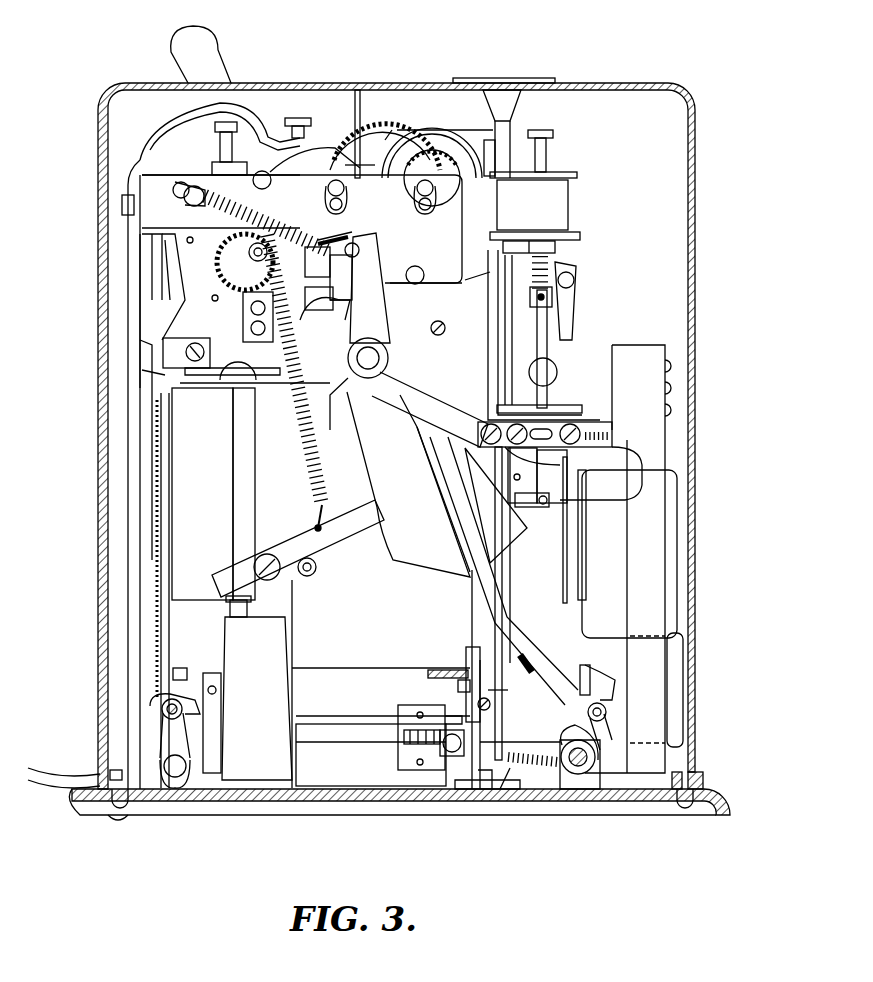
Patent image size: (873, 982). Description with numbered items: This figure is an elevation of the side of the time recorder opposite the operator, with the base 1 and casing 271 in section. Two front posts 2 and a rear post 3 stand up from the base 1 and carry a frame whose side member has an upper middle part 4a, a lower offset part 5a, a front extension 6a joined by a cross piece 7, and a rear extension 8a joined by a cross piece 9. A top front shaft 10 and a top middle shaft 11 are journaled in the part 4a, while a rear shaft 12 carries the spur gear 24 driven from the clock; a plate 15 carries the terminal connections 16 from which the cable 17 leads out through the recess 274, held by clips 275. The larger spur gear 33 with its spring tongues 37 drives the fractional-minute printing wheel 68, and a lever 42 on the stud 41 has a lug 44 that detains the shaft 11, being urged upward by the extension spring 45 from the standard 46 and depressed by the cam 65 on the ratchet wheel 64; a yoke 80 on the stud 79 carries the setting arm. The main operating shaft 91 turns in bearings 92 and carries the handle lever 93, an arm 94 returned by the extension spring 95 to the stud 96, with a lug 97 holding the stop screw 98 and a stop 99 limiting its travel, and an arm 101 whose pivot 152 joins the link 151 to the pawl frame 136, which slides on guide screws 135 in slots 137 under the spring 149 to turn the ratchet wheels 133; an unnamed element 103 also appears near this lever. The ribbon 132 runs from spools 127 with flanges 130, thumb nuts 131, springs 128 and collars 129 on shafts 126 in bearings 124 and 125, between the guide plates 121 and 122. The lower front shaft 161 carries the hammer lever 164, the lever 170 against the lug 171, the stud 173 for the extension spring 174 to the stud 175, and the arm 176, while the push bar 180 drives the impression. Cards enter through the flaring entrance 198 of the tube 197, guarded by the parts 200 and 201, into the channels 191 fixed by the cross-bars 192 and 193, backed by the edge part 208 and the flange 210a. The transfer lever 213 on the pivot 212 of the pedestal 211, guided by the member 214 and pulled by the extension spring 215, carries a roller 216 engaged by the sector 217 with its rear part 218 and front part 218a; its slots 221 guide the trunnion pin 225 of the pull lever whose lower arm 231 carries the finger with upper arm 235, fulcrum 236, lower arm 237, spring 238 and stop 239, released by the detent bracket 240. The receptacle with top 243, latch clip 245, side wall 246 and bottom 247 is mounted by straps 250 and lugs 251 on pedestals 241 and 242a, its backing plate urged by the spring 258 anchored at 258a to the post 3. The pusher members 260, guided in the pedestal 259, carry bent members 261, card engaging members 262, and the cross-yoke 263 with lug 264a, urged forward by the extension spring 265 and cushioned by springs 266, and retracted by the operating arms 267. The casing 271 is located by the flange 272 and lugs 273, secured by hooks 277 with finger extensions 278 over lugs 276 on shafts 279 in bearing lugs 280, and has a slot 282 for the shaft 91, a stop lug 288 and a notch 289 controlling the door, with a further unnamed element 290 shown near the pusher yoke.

The base 1 is at (352, 805).
The front post 2 is at (658, 532).
The rear post 3 is at (152, 528).
The upper middle part 4a is at (396, 283).
The lower middle outwardly offset part 5a is at (492, 375).
The front extension 6a is at (618, 345).
The cross piece 7 is at (662, 346).
The rear extension 8a is at (178, 238).
The cross piece 9 is at (150, 178).
The top front shaft 10 is at (428, 215).
The top middle shaft 11 is at (350, 205).
The rear shaft 12 is at (248, 258).
The plate 15 is at (218, 378).
The terminal connections 16 is at (305, 120).
The cable 17 is at (165, 126).
The spur gear 24 is at (210, 276).
The larger spur gear 33 is at (370, 128).
The spring tongues 37 is at (335, 168).
The stud 41 is at (253, 182).
The lever 42 is at (313, 190).
The lug 44 is at (348, 190).
The extension spring 45 is at (305, 122).
The standard 46 is at (358, 88).
The ratchet wheel 64 is at (432, 190).
The cam 65 is at (410, 190).
The fractional-minute printing wheel 68 is at (462, 150).
The stud 79 is at (366, 250).
The yoke 80 is at (310, 280).
The main operating shaft 91 is at (388, 362).
The bearings 92 is at (340, 415).
The handle lever 93 is at (214, 66).
The arm 94 is at (362, 232).
The extension spring 95 is at (318, 230).
The stud 96 is at (188, 182).
The lug 97 is at (335, 315).
The stop screw 98 is at (368, 285).
The stop 99 is at (428, 328).
The arm 101 is at (396, 378).
The rod 103 is at (310, 418).
The ribbon guide rear plate 121 is at (505, 145).
The ribbon guide front plate 122 is at (506, 155).
The upper bearing 124 is at (556, 248).
The lower bearing 125 is at (550, 398).
The vertical shaft 126 is at (552, 385).
The ribbon spool 127 is at (580, 237).
The helical spring 128 is at (565, 280).
The collar 129 is at (565, 315).
The removable top flange 130 is at (575, 172).
The thumb nut 131 is at (552, 140).
The ribbon 132 is at (568, 208).
The ratchet wheel 133 is at (558, 418).
The guide screw 135 is at (580, 462).
The pawl frame 136 is at (612, 460).
The slot 137 is at (610, 428).
The spring 149 is at (612, 442).
The link 151 is at (436, 450).
The pivot 152 is at (420, 440).
The lower front shaft 161 is at (556, 368).
The hammer lever 164 is at (555, 262).
The lever 170 is at (578, 300).
The lug 171 is at (560, 328).
The stud 173 is at (580, 285).
The extension spring 174 is at (498, 290).
The stud 175 is at (420, 272).
The arm 176 is at (510, 340).
The push bar 180 is at (500, 305).
The channel 191 is at (512, 608).
The bottom cross-bar 192 is at (508, 718).
The top cross-bar 193 is at (480, 282).
The flat tube 197 is at (518, 126).
The flaring entrance 198 is at (520, 100).
The top forwardly extending part 200 is at (490, 132).
The rear downwardly extending part 201 is at (398, 128).
The upper edge part 208 is at (498, 352).
The flange 210a is at (480, 644).
The pedestal 211 is at (292, 704).
The pivot 212 is at (266, 552).
The transfer lever 213 is at (318, 562).
The guide member 214 is at (515, 592).
The extension spring 215 is at (310, 470).
The roller 216 is at (310, 578).
The sector 217 is at (370, 450).
The rear part 218 is at (412, 576).
The front part 218a is at (528, 560).
The longitudinal slot 221 is at (505, 482).
The trunnion pin 225 is at (530, 476).
The lower arm 231 is at (546, 508).
The upper arm 235 is at (574, 494).
The fulcrum 236 is at (545, 520).
The lower arm 237 is at (530, 535).
The spring 238 is at (528, 512).
The stop 239 is at (536, 530).
The detent bracket 240 is at (585, 505).
The pedestal 241 is at (218, 692).
The pedestal 242a is at (478, 780).
The casing top 243 is at (170, 364).
The latch clip 245 is at (300, 410).
The vertical side wall 246 is at (355, 672).
The bottom 247 is at (392, 696).
The strap 250 is at (232, 476).
The lug 251 is at (225, 650).
The spring 258 is at (168, 566).
The rear end connection 258a is at (165, 436).
The rear middle pedestal 259 is at (300, 724).
The lower front to rear member 260 is at (356, 750).
The bent member 261 is at (680, 640).
The card engaging member 262 is at (588, 560).
The cross-yoke 263 is at (455, 762).
The round lug 264a is at (458, 708).
The extension spring 265 is at (548, 760).
The short spring 266 is at (463, 742).
The operating arm 267 is at (540, 664).
The casing 271 is at (688, 204).
The flange 272 is at (113, 816).
The lug 273 is at (130, 814).
The recess 274 is at (90, 760).
The clip 275 is at (122, 205).
The lug 276 is at (190, 710).
The hook 277 is at (160, 697).
The finger extension 278 is at (208, 668).
The shaft 279 is at (195, 798).
The bearing lug 280 is at (190, 768).
The slot 282 is at (510, 83).
The stop lug 288 is at (400, 728).
The notch 289 is at (466, 676).
The block 290 is at (466, 690).